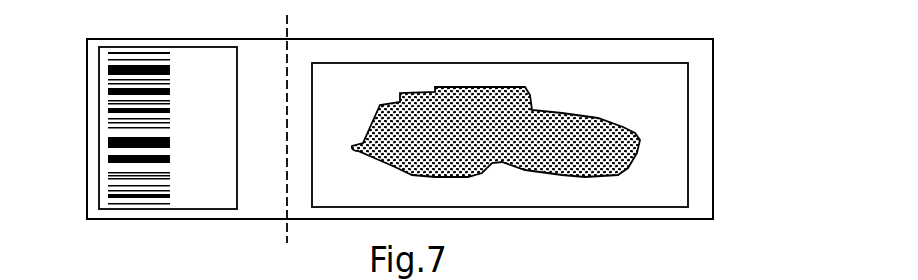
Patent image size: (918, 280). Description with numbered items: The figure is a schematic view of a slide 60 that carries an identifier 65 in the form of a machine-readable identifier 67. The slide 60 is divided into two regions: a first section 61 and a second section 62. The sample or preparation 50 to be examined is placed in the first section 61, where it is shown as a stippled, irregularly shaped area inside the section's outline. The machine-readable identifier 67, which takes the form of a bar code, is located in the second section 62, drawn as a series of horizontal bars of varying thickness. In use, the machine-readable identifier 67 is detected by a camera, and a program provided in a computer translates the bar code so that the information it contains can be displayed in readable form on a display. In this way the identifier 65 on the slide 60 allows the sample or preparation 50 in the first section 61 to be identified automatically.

The sample or preparation 50 is at (555, 120).
The slide 60 is at (713, 155).
The first section 61 is at (520, 219).
The second section 62 is at (218, 220).
The identifier 65 is at (194, 47).
The machine-readable identifier 67 is at (110, 146).